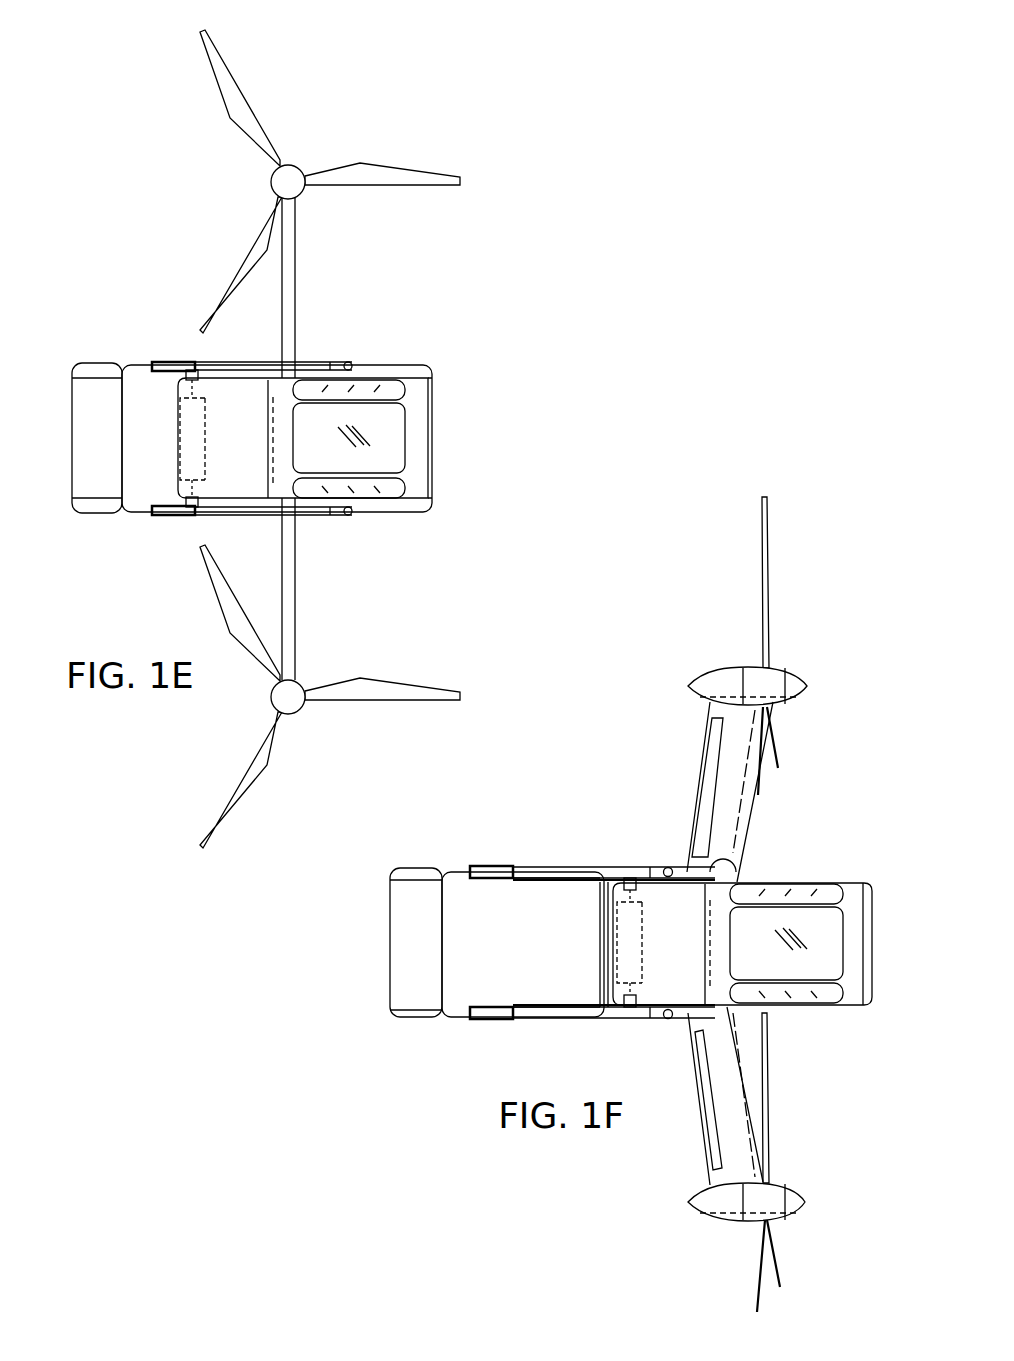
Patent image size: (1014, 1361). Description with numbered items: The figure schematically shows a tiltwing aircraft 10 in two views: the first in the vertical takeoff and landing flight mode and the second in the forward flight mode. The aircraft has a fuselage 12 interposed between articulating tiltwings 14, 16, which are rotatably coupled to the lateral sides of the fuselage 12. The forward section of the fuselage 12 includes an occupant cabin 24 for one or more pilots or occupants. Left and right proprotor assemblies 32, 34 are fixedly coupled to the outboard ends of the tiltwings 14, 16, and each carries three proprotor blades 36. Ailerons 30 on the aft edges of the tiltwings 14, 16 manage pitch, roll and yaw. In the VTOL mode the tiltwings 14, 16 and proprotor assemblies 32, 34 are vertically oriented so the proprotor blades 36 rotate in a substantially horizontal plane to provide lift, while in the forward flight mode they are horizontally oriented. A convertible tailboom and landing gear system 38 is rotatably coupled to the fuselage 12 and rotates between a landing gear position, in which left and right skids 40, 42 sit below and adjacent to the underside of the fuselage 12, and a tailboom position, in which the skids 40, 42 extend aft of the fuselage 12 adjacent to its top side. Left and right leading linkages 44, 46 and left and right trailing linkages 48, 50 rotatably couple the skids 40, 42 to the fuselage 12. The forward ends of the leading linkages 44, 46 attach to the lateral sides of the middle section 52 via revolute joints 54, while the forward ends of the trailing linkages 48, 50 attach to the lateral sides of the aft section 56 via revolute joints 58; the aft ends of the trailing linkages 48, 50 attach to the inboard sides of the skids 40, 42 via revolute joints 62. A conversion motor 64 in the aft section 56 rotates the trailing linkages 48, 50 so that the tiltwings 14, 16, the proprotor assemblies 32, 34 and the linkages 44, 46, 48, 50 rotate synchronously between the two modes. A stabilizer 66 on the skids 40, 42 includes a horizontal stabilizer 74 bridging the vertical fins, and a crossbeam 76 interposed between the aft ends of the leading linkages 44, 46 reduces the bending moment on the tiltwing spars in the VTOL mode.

In FIG. 1E, the tiltwing aircraft 10 is at (105, 68).
In FIG. 1F, the tiltwing aircraft 10 is at (612, 726).
In FIG. 1E, the fuselage 12 is at (436, 412).
In FIG. 1F, the fuselage 12 is at (876, 960).
In FIG. 1E, the tiltwing 14 is at (297, 244).
In FIG. 1F, the tiltwing 14 is at (753, 806).
In FIG. 1E, the tiltwing 16 is at (297, 638).
In FIG. 1F, the tiltwing 16 is at (776, 1092).
In FIG. 1E, the occupant cabin 24 is at (400, 441).
In FIG. 1F, the occupant cabin 24 is at (826, 930).
In FIG. 1F, the aileron 30 is at (706, 1135).
In FIG. 1E, the left proprotor assembly 32 is at (268, 181).
In FIG. 1F, the left proprotor assembly 32 is at (796, 673).
In FIG. 1E, the right proprotor assembly 34 is at (290, 714).
In FIG. 1F, the right proprotor assembly 34 is at (798, 1216).
In FIG. 1E, the proprotor blade 36 is at (230, 70).
In FIG. 1F, the proprotor blade 36 is at (773, 535).
In FIG. 1E, the convertible tailboom and landing gear system 38 is at (72, 506).
In FIG. 1F, the convertible tailboom and landing gear system 38 is at (392, 905).
In FIG. 1E, the left skid 40 is at (348, 360).
In FIG. 1F, the left skid 40 is at (568, 866).
In FIG. 1E, the right skid 42 is at (350, 520).
In FIG. 1F, the right skid 42 is at (568, 1020).
In FIG. 1F, the left leading linkage 44 is at (668, 868).
In FIG. 1F, the right leading linkage 46 is at (668, 1022).
In FIG. 1F, the left trailing linkage 48 is at (528, 880).
In FIG. 1F, the right trailing linkage 50 is at (526, 1005).
In FIG. 1E, the middle section 52 is at (276, 415).
In FIG. 1F, the middle section 52 is at (712, 917).
In FIG. 1F, the revolute joint 54 is at (736, 871).
In FIG. 1E, the aft section 56 is at (192, 442).
In FIG. 1F, the aft section 56 is at (627, 950).
In FIG. 1E, the revolute joint 58 is at (190, 366).
In FIG. 1F, the revolute joint 58 is at (630, 876).
In FIG. 1F, the revolute joint 62 is at (506, 866).
In FIG. 1E, the conversion motor 64 is at (206, 454).
In FIG. 1F, the conversion motor 64 is at (648, 958).
In FIG. 1E, the stabilizer 66 is at (97, 364).
In FIG. 1F, the stabilizer 66 is at (392, 948).
In FIG. 1E, the horizontal stabilizer 74 is at (72, 440).
In FIG. 1F, the horizontal stabilizer 74 is at (390, 985).
In FIG. 1F, the crossbeam 76 is at (598, 965).